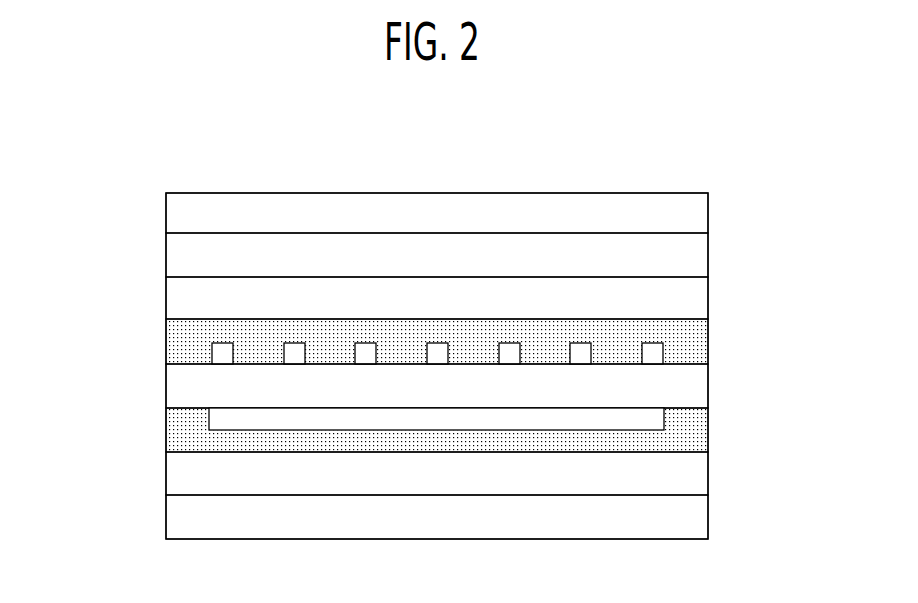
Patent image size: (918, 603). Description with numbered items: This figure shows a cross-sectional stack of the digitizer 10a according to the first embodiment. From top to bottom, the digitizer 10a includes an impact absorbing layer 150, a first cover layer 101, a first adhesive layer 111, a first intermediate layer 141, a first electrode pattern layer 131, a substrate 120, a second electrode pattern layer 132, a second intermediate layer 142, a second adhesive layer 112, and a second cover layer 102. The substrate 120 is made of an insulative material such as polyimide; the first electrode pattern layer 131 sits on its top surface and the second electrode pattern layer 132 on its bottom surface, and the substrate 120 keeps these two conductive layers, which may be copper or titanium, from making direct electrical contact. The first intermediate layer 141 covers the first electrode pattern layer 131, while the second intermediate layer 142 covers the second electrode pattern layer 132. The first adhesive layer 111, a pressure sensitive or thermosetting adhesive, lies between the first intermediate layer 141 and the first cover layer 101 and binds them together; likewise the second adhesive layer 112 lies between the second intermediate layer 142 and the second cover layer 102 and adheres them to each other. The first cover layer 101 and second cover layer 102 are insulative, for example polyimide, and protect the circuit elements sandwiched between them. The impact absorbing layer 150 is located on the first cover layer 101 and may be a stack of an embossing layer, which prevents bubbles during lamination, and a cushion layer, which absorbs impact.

The digitizer 10a is at (459, 149).
The impact absorbing layer 150 is at (708, 211).
The first cover layer 101 is at (708, 257).
The first adhesive layer 111 is at (708, 302).
The first intermediate layer 141 is at (708, 348).
The first electrode pattern layer 131 is at (212, 352).
The substrate 120 is at (708, 390).
The second intermediate layer 142 is at (708, 432).
The second electrode pattern layer 132 is at (209, 417).
The second adhesive layer 112 is at (708, 472).
The second cover layer 102 is at (708, 520).